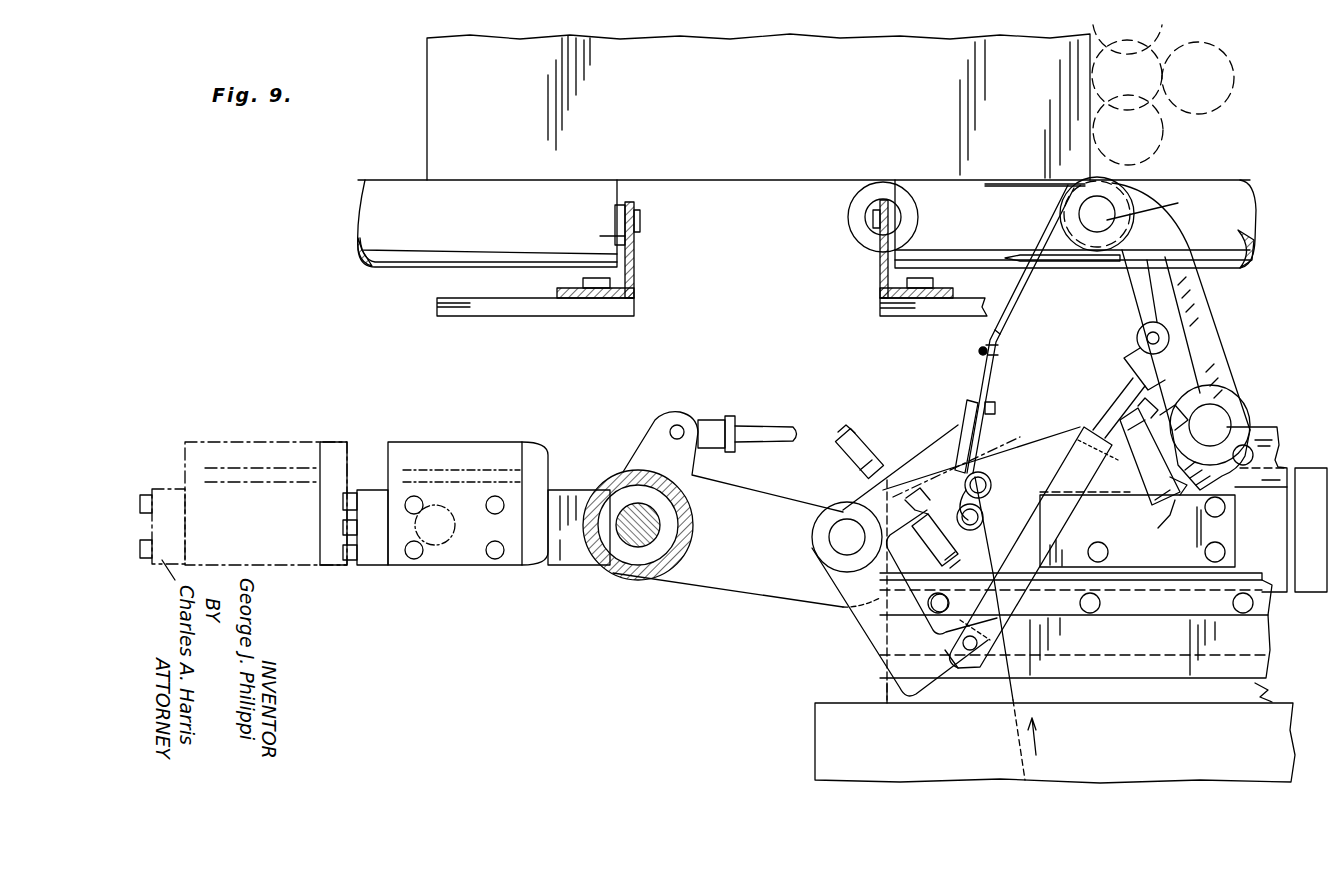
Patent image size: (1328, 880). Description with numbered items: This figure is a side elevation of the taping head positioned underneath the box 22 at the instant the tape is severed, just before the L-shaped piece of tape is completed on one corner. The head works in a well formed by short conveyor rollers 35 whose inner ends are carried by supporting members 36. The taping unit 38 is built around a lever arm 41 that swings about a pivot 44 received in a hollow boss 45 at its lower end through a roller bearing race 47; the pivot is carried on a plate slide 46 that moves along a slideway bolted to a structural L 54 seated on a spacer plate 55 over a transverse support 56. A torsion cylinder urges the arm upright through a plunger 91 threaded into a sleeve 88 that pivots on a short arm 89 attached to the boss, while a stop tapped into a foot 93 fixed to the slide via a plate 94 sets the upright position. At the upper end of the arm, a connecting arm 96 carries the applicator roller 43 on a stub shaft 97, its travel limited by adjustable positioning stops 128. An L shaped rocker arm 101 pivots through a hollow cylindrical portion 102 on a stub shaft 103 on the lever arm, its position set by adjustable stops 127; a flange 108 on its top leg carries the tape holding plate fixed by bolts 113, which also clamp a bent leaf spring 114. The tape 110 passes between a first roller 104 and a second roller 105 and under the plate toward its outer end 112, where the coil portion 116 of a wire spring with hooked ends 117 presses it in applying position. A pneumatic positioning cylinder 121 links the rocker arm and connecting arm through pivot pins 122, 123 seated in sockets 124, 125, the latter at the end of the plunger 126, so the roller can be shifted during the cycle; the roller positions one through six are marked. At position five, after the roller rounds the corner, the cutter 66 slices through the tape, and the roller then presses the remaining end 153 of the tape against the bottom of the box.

The box 22 is at (866, 84).
The short conveyor rollers 35 is at (492, 222).
The supporting members 36 is at (636, 264).
The taping unit 38 is at (805, 622).
The lever arm 41 is at (718, 582).
The applicator roller 43 is at (1228, 55).
The pivot 44 is at (437, 540).
The hollow boss 45 is at (668, 575).
The plate slide 46 is at (1296, 520).
The roller bearing race 47 is at (638, 565).
The structural L 54 is at (1168, 644).
The spacer plate 55 is at (1272, 692).
The transverse support 56 is at (1163, 746).
The cutter 66 is at (1103, 270).
The sleeve 88 is at (708, 420).
The short arm 89 is at (645, 430).
The plunger 91 is at (770, 425).
The foot 93 is at (333, 550).
The plate 94 is at (1139, 535).
The connecting arm 96 is at (1213, 300).
The stub shaft 97 is at (1154, 207).
The L shaped rocker arm 101 is at (843, 580).
The hollow cylindrical portion 102 is at (822, 517).
The stub shaft 103 is at (840, 538).
The first roller 104 is at (983, 518).
The second roller 105 is at (991, 489).
The flange 108 is at (968, 402).
The tape 110 is at (1010, 312).
The outer end of the plate 112 is at (1003, 335).
The bolts 113 is at (995, 408).
The bent leaf spring 114 is at (1000, 346).
The coil portion 116 is at (979, 351).
The hooked ends 117 is at (1000, 357).
The pneumatic positioning cylinder 121 is at (1060, 468).
The pivot pin 122 is at (970, 652).
The pivot pin 123 is at (1160, 337).
The socket 124 is at (950, 660).
The socket 125 is at (1130, 344).
The plunger 126 is at (1120, 383).
The adjustable stops 127 is at (870, 432).
The adjustable positioning stops 128 is at (1153, 466).
The remaining end of the tape 153 is at (1022, 186).